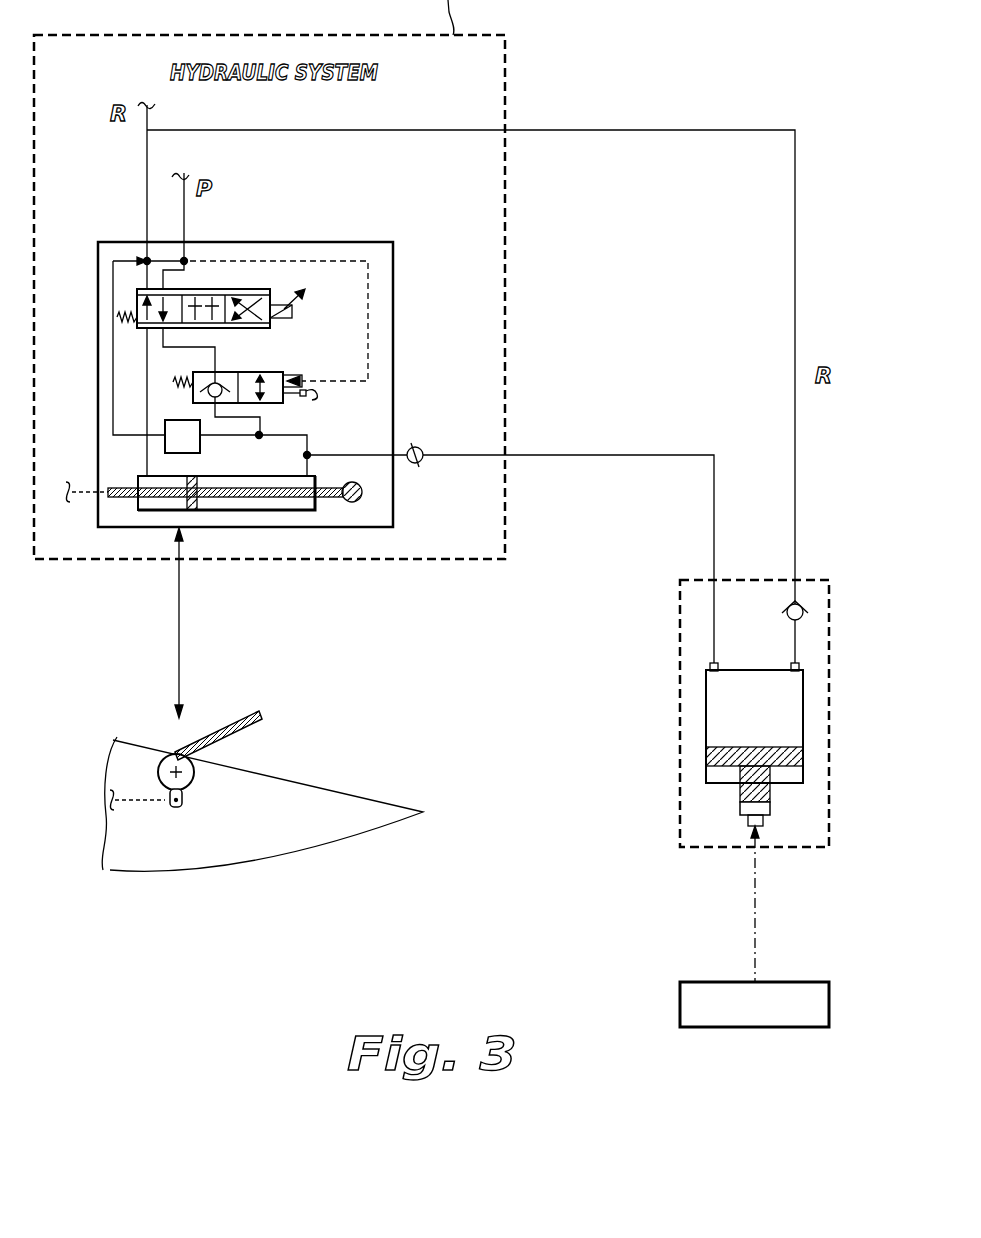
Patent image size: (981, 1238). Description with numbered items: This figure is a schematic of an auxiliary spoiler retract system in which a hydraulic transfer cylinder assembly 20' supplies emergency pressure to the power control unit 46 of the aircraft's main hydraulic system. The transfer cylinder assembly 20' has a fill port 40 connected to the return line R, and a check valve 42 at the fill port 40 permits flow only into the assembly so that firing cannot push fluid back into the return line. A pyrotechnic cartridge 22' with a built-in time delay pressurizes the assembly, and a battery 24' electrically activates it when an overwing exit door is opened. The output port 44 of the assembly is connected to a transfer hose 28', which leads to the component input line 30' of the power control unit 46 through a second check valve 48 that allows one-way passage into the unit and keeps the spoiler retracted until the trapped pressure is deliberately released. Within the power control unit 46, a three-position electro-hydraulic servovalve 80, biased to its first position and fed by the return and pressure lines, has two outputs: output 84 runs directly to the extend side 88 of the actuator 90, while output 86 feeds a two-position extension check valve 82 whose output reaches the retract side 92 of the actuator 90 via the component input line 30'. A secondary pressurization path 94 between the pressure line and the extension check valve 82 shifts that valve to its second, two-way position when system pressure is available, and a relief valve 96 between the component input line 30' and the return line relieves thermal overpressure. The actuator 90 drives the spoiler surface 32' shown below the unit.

The hydraulic transfer cylinder assembly 20' is at (724, 713).
The pyrotechnic cartridge 22' is at (810, 851).
The battery 24' is at (727, 993).
The transfer hose 28' is at (510, 535).
The component input line 30' is at (335, 431).
The blade 32' is at (227, 713).
The fill port 40 is at (798, 665).
The check valve 42 is at (797, 607).
The output port 44 is at (718, 665).
The power control unit 46 is at (335, 242).
The second check valve 48 is at (415, 447).
The three-position electro-hydraulic servovalve 80 is at (263, 289).
The two-position extension check valve 82 is at (275, 372).
The output 84 is at (147, 405).
The output 86 is at (163, 340).
The extend side 88 is at (140, 480).
The actuator 90 is at (287, 512).
The retract side 92 is at (265, 480).
The secondary pressurization path 94 is at (370, 300).
The relief valve 96 is at (200, 447).